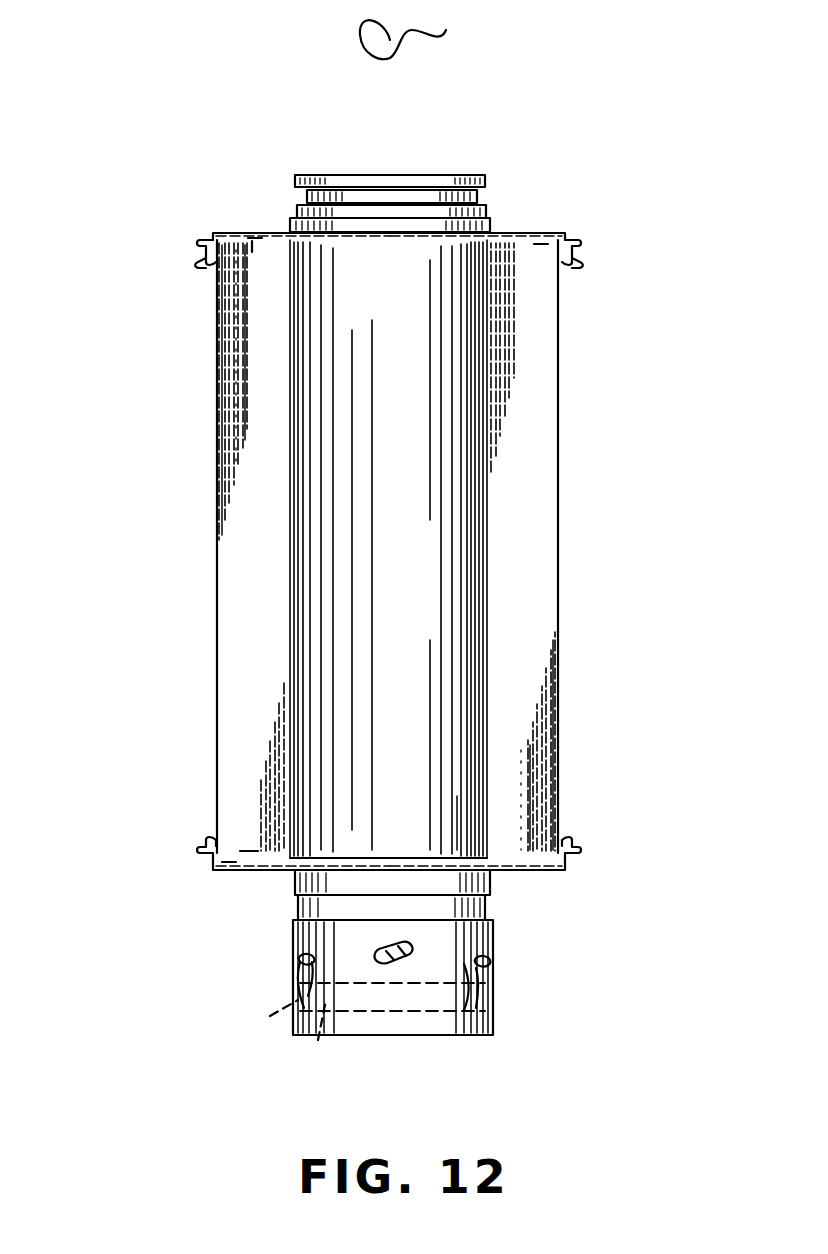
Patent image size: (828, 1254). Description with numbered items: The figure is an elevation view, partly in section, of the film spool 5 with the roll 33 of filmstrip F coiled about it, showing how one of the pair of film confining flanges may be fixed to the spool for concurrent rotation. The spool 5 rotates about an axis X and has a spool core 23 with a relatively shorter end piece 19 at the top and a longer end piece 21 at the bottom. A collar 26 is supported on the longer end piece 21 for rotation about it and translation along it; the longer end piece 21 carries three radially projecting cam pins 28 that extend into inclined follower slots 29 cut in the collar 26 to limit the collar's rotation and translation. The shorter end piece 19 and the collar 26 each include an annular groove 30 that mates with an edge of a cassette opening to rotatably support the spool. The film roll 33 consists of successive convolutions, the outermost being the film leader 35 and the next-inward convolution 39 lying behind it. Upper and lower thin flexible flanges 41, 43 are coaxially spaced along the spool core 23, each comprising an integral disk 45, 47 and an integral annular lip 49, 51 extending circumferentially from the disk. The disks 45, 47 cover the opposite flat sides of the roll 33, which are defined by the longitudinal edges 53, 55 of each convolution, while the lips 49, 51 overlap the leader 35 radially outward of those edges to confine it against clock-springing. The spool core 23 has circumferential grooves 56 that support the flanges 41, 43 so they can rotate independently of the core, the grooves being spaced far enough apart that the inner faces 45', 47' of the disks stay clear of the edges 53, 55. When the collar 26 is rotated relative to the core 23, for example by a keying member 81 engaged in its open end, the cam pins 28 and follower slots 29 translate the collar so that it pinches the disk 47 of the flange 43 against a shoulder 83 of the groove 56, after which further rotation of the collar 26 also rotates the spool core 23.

The axis X is at (390, 175).
The film spool 5 is at (200, 592).
The shorter end piece 19 is at (470, 178).
The longer end piece 21 is at (270, 1016).
The spool core 23 is at (302, 172).
The collar 26 is at (510, 1008).
The cam pins 28 is at (295, 958).
The follower slots 29 is at (300, 985).
The annular groove 30 is at (487, 205).
The film roll 33 is at (202, 509).
The film leader 35 is at (217, 283).
The next-inward convolution 39 is at (217, 358).
The upper film confining flange 41 is at (200, 234).
The lower film confining flange 43 is at (200, 856).
The disk 45 is at (210, 187).
The inner face 45' is at (299, 280).
The disk 47 is at (178, 898).
The inner face 47' is at (516, 780).
The annular lip 49 is at (566, 245).
The annular lip 51 is at (570, 854).
The longitudinal edge 53 is at (540, 252).
The longitudinal edge 55 is at (248, 851).
The circumferential grooves 56 is at (374, 240).
The keying member 81 is at (318, 1042).
The shoulder 83 is at (466, 858).
The filmstrip F is at (217, 460).